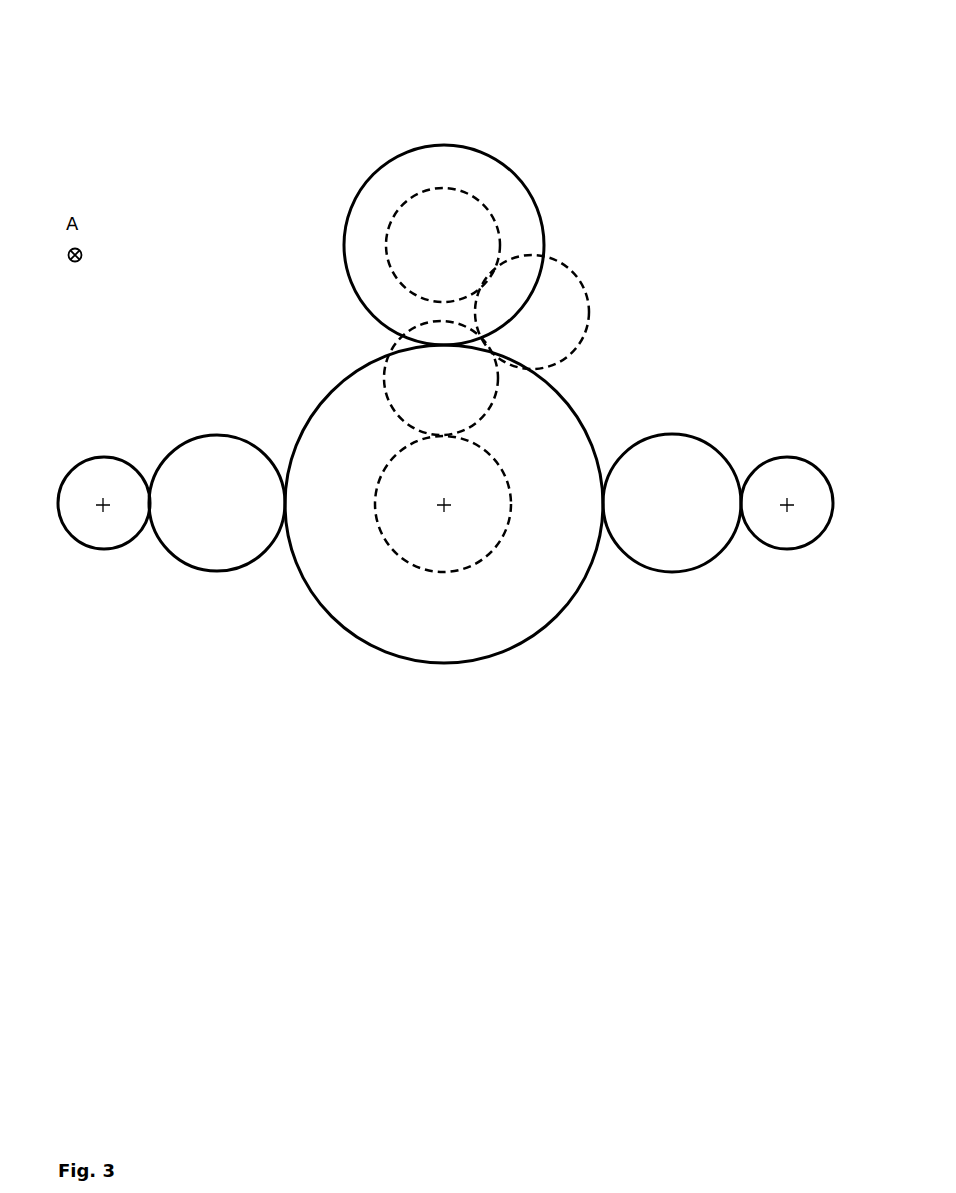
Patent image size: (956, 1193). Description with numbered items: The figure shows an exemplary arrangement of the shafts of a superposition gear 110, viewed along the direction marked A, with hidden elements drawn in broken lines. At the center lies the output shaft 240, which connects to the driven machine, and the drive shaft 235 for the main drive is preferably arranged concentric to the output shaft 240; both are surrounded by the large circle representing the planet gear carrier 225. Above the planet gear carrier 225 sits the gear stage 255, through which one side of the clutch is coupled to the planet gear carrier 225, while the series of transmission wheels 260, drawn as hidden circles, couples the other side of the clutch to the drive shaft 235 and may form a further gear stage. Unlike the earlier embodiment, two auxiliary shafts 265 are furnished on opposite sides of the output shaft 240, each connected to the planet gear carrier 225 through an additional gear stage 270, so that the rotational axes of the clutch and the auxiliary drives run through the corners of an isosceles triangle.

The superposition gear 110 is at (138, 96).
The planet gear carrier 225 is at (367, 643).
The drive shaft 235 is at (445, 517).
The output shaft 240 is at (444, 512).
The gear stage 255 is at (360, 192).
The transmission wheels 260 is at (385, 391).
The auxiliary shaft 265 is at (103, 512).
The gear stage 270 is at (230, 573).